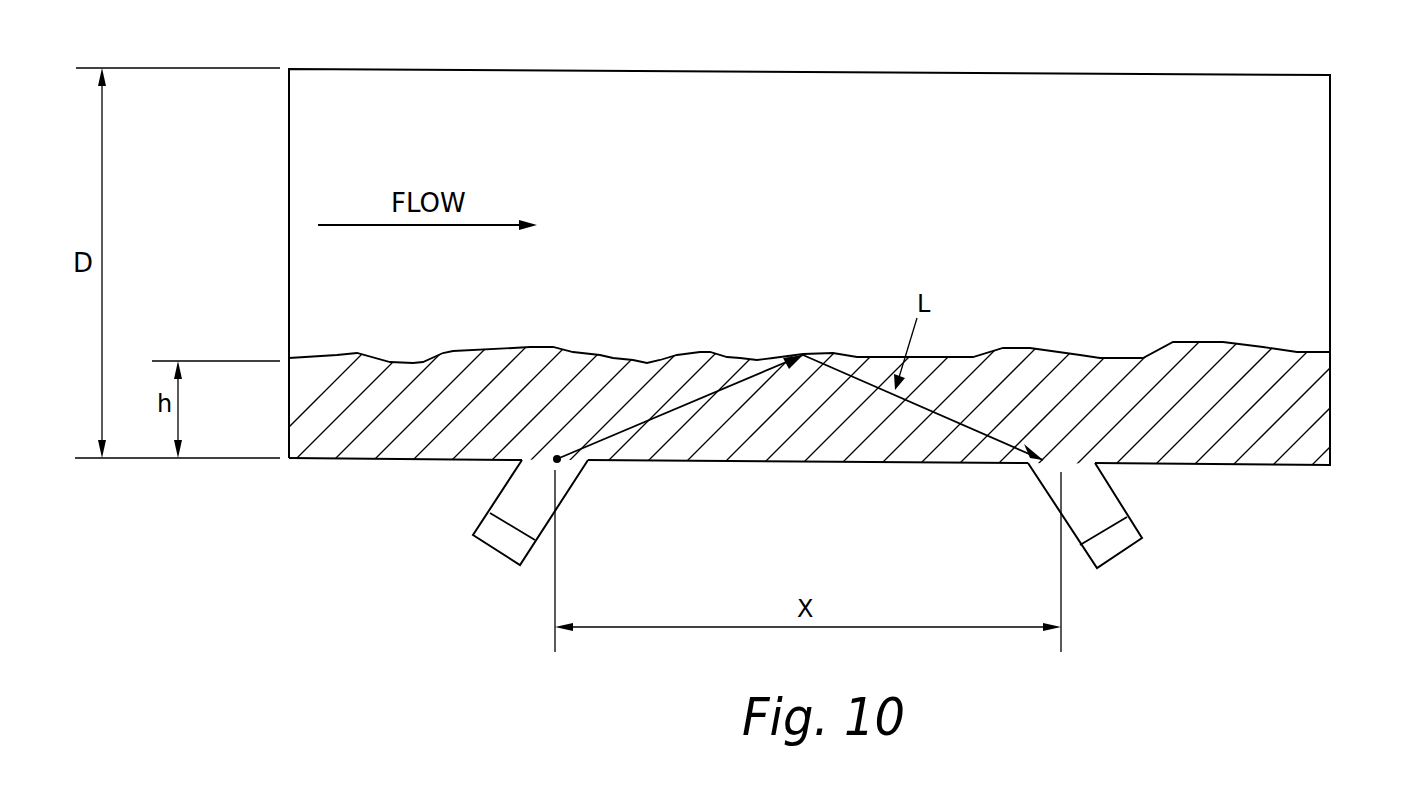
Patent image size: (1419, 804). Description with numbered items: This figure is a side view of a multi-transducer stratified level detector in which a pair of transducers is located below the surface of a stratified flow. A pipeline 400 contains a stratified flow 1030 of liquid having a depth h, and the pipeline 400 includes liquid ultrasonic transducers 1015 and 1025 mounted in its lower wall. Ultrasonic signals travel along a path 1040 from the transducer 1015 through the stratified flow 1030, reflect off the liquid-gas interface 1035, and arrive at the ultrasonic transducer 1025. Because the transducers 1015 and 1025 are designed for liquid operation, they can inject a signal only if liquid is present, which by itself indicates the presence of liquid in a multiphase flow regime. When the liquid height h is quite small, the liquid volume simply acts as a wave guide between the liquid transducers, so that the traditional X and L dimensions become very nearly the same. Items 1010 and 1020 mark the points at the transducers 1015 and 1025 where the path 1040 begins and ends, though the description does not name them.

The pipeline 400 is at (1240, 75).
The first ultrasonic transducer 1010 is at (557, 458).
The liquid ultrasonic transducer 1015 is at (563, 498).
The second ultrasonic transducer 1020 is at (1062, 462).
The liquid ultrasonic transducer 1025 is at (1118, 498).
The stratified flow 1030 is at (1318, 411).
The liquid-gas interface 1035 is at (1195, 341).
The path 1040 is at (963, 415).